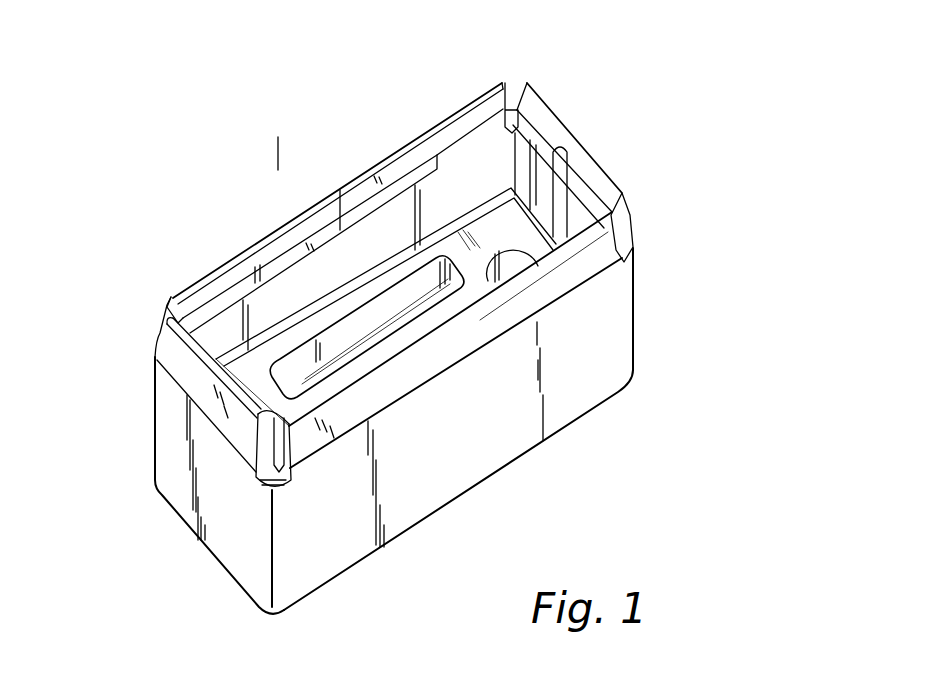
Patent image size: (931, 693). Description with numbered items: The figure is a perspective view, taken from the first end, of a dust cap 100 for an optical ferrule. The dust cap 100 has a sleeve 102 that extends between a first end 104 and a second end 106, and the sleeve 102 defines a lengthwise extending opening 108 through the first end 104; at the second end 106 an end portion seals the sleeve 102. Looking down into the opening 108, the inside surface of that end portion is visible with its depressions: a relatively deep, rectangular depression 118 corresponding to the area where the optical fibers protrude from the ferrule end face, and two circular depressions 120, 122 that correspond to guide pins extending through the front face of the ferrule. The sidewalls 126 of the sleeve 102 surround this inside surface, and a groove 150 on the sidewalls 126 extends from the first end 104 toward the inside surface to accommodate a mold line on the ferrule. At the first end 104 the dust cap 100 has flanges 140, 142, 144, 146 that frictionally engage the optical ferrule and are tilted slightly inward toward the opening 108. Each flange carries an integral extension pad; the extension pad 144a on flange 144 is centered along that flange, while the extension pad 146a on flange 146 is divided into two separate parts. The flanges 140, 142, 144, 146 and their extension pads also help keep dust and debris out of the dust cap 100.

The dust cap 100 is at (759, 128).
The sleeve 102 is at (623, 302).
The first end 104 is at (637, 231).
The second end 106 is at (624, 398).
The lengthwise extending opening 108 is at (278, 315).
The depression 118 is at (417, 290).
The depression 120 is at (504, 255).
The depression 122 is at (157, 361).
The sidewalls 126 is at (489, 192).
The flange 140 is at (444, 371).
The flange 142 is at (205, 387).
The flange 144 is at (340, 190).
The extension pad 144a is at (285, 255).
The flange 146 is at (604, 168).
The extension pad 146a is at (504, 212).
The groove 150 is at (573, 135).